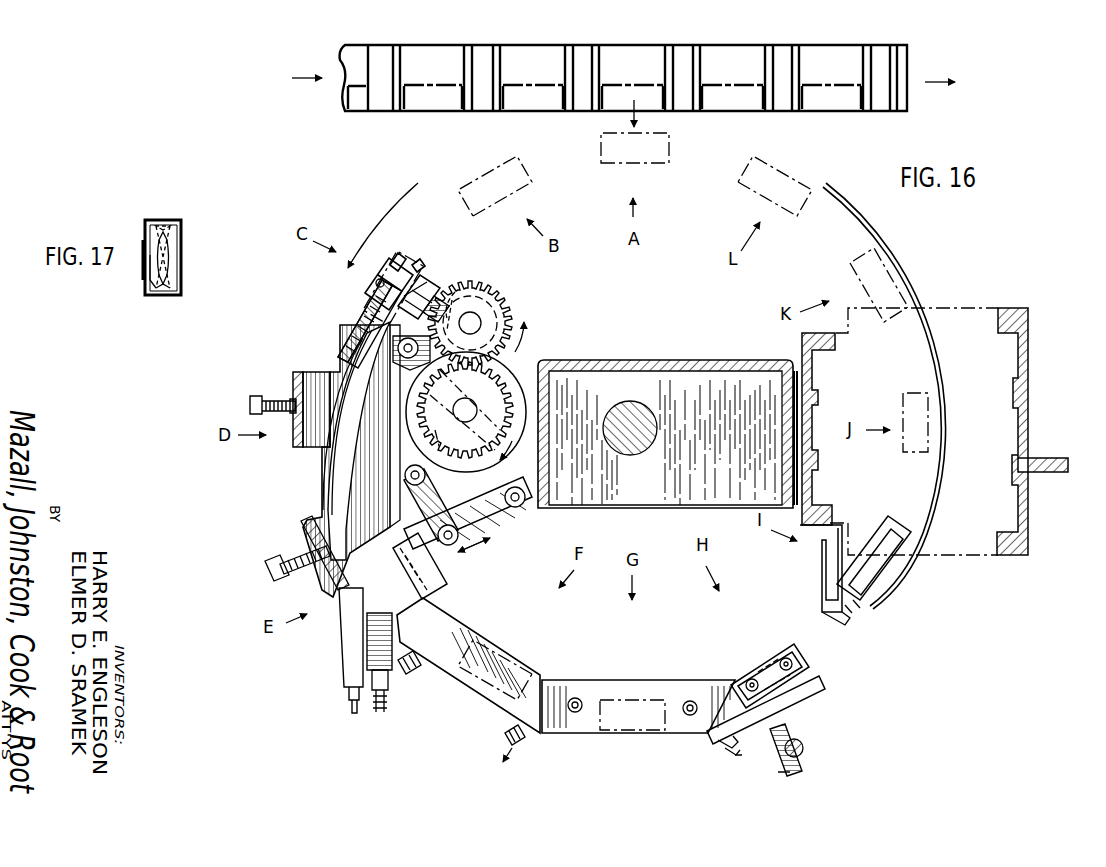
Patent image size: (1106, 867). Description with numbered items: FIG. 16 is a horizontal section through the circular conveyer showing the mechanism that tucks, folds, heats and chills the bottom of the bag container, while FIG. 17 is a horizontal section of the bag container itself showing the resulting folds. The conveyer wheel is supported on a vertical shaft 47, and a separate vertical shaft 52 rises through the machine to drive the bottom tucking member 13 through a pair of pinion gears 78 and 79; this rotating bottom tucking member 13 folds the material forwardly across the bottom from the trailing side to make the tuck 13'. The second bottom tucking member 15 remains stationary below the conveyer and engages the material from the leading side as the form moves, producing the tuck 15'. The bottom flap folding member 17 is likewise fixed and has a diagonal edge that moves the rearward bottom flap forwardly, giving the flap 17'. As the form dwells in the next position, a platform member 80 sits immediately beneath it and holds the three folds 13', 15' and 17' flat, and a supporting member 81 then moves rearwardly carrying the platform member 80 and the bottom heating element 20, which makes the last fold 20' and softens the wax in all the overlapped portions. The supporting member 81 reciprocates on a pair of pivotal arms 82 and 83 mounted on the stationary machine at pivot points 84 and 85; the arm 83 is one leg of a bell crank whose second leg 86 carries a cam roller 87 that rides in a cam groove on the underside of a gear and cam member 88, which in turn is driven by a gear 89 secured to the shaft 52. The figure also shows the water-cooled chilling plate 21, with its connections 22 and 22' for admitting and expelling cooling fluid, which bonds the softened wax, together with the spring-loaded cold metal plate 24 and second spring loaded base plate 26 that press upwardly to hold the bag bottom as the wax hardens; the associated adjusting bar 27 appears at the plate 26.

In FIG. 16, the bottom tucking member 13 is at (403, 272).
In FIG. 16, the second bottom tucking member 15 is at (353, 320).
In FIG. 16, the bottom flap folding member 17 is at (346, 459).
In FIG. 16, the bottom heating element 20 is at (334, 650).
In FIG. 16, the chilling plate 21 is at (487, 640).
In FIG. 16, the connection 22 is at (413, 683).
In FIG. 16, the connection 22' is at (489, 743).
In FIG. 16, the cold metal plate 24 is at (588, 715).
In FIG. 16, the second spring loaded base plate 26 is at (805, 670).
In FIG. 16, the adjusting bar 27 is at (705, 738).
In FIG. 16, the vertical shaft 47 is at (643, 405).
In FIG. 16, the vertical shaft 52 is at (482, 320).
In FIG. 16, the pinion gear 78 is at (467, 302).
In FIG. 16, the pinion gear 79 is at (490, 306).
In FIG. 16, the platform member 80 is at (445, 566).
In FIG. 16, the supporting member 81 is at (500, 520).
In FIG. 16, the pivotal arm 82 is at (400, 508).
In FIG. 16, the pivotal arm 83 is at (508, 486).
In FIG. 16, the pivot point 84 is at (408, 477).
In FIG. 16, the pivot point 85 is at (368, 322).
In FIG. 16, the second leg 86 is at (465, 410).
In FIG. 16, the cam roller 87 is at (465, 410).
In FIG. 16, the gear and cam member 88 is at (518, 382).
In FIG. 16, the gear 89 is at (466, 290).
In FIG. 17, the tuck 13' is at (179, 236).
In FIG. 17, the tuck 15' is at (168, 282).
In FIG. 17, the flap 17' is at (186, 257).
In FIG. 17, the last fold 20' is at (129, 280).